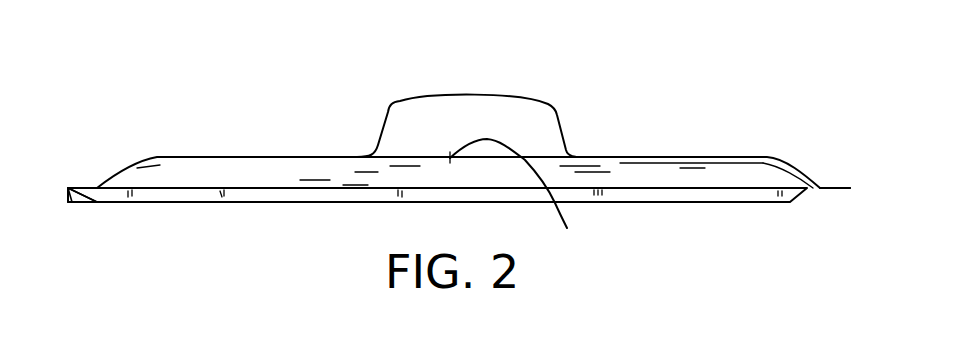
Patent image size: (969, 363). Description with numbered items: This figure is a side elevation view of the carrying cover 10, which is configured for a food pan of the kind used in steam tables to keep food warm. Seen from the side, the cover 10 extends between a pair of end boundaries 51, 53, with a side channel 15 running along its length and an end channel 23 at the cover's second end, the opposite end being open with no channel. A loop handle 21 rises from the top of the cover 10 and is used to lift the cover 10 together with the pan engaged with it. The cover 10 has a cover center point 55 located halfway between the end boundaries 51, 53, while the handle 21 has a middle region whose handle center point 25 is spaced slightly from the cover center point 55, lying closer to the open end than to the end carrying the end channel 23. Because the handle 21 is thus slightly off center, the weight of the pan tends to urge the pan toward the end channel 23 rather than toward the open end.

The carrying cover 10 is at (301, 104).
The side channel 15 is at (345, 193).
The loop handle 21 is at (552, 107).
The end channel 23 is at (66, 200).
The handle center point 25 is at (477, 98).
The end boundary 51 is at (67, 197).
The end boundary 53 is at (850, 188).
The cover center point 55 is at (526, 192).